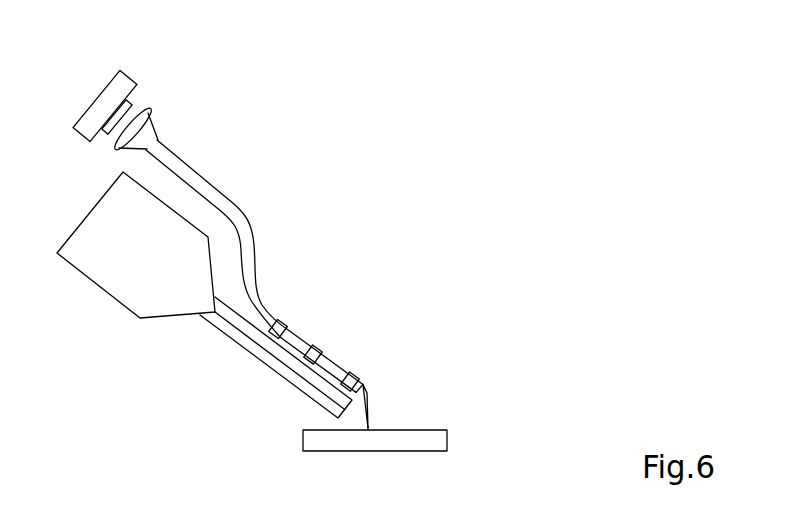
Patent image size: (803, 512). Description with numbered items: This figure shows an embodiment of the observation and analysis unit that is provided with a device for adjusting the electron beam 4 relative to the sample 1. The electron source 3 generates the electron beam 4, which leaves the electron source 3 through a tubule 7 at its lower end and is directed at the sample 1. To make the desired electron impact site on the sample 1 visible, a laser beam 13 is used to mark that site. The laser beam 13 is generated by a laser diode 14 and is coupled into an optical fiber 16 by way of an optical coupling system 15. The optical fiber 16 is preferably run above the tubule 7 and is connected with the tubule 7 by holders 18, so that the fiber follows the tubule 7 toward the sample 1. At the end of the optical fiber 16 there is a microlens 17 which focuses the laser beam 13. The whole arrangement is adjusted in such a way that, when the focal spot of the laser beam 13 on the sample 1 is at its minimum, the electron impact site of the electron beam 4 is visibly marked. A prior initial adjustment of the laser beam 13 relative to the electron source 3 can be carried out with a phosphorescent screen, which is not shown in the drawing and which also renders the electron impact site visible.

The sample 1 is at (433, 438).
The electron source 3 is at (87, 225).
The electron beam 4 is at (287, 377).
The tubule 7 is at (238, 340).
The laser beam 13 is at (367, 409).
The laser diode 14 is at (98, 107).
The optical coupling system 15 is at (152, 115).
The optical fiber 16 is at (232, 205).
The microlens 17 is at (366, 387).
The holders 18 is at (287, 327).